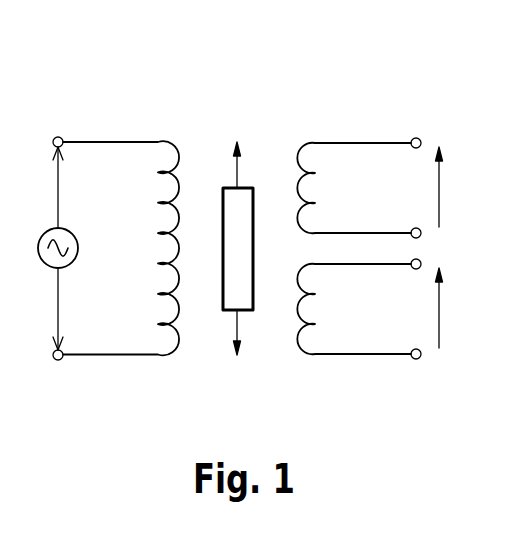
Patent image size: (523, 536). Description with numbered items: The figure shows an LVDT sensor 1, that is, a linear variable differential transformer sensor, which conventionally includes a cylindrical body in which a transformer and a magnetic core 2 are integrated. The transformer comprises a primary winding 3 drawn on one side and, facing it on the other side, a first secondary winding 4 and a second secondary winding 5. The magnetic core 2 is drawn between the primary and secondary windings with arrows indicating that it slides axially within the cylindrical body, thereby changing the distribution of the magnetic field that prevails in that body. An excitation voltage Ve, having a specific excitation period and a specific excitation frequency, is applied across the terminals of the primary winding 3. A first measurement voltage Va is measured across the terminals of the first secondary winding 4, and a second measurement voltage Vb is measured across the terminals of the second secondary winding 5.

The LVDT sensor 1 is at (272, 62).
The magnetic core 2 is at (247, 300).
The primary winding 3 is at (153, 141).
The first secondary winding 4 is at (370, 141).
The second secondary winding 5 is at (370, 356).